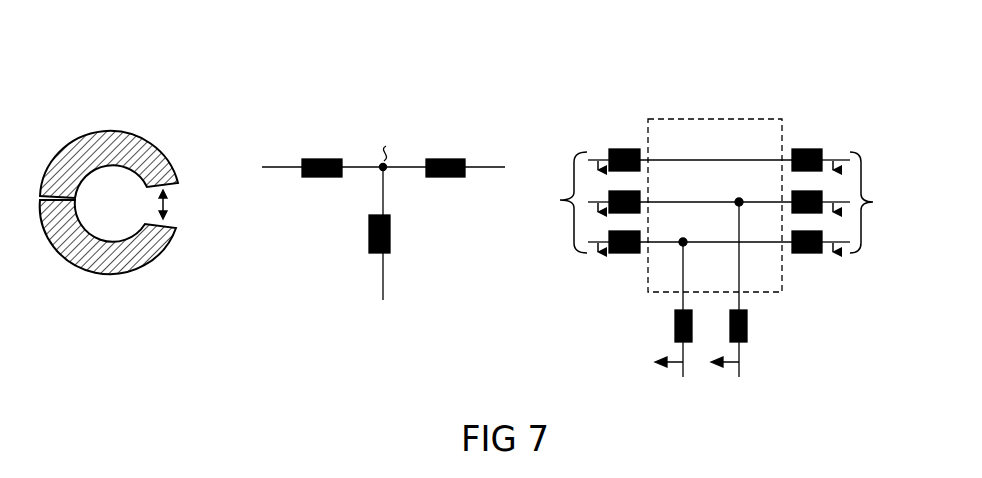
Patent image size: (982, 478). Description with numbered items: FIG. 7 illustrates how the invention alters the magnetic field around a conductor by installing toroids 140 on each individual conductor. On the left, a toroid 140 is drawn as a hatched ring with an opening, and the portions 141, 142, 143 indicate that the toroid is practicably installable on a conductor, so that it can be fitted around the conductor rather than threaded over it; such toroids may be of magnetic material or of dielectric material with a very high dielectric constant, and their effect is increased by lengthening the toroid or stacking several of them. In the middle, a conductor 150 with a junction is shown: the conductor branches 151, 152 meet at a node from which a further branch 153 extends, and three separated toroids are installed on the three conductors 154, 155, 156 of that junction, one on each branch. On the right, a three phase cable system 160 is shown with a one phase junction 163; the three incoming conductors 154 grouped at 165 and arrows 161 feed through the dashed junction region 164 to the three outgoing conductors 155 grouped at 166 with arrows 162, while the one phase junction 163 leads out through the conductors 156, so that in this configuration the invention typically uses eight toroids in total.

The toroid 140 is at (141, 207).
The toroid installation 141 is at (66, 268).
The toroid installation 142 is at (156, 140).
The toroid installation 143 is at (176, 203).
The conductor with junction 150 is at (575, 224).
The first terminal line 151 is at (262, 172).
The second terminal line 152 is at (496, 173).
The output line 153 is at (388, 269).
The conductor 154 is at (332, 147).
The conductor 155 is at (443, 148).
The conductor 156 is at (366, 240).
The three phase cable system 160 is at (708, 256).
The input current direction A 161 is at (598, 268).
The input current direction B 162 is at (833, 256).
The one phase junction 163 is at (664, 362).
The interconnection region 164 is at (782, 127).
The first input group 165 is at (558, 196).
The second input group 166 is at (864, 256).